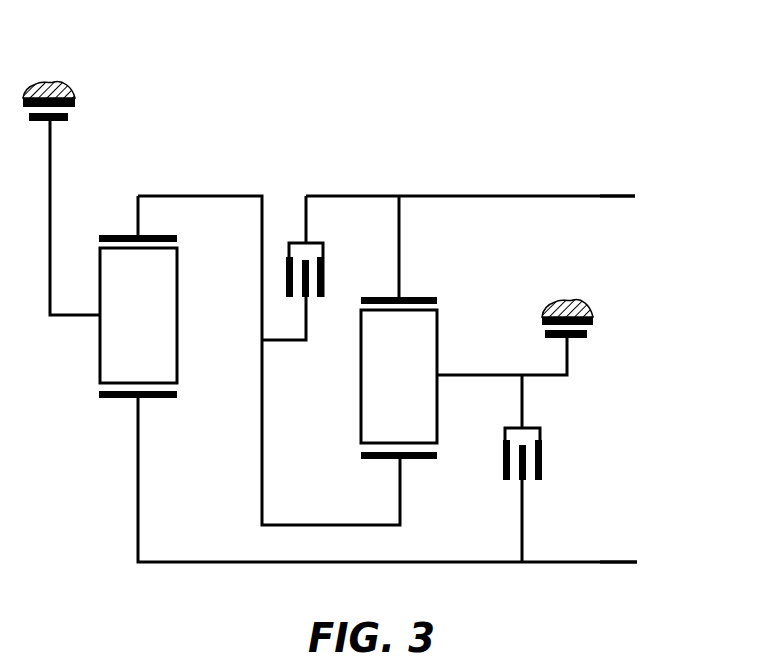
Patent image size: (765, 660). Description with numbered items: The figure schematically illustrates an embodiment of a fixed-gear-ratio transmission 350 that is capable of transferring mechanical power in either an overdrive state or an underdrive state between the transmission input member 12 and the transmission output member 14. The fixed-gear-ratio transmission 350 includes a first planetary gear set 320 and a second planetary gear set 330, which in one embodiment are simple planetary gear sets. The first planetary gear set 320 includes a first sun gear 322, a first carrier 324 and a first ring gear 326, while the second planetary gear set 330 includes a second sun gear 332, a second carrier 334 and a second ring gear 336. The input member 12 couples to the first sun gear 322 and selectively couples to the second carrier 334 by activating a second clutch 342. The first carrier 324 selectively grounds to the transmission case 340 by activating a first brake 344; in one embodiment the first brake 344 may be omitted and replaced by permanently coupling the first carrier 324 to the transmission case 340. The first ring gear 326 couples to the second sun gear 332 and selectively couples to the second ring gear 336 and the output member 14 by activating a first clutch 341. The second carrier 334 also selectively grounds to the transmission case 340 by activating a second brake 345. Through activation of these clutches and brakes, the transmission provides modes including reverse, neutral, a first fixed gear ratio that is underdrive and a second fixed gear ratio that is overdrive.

The fixed-gear-ratio transmission 350 is at (612, 104).
The first planetary gear set 320 is at (147, 315).
The first sun gear 322 is at (153, 399).
The first carrier 324 is at (158, 328).
The first ring gear 326 is at (110, 234).
The second planetary gear set 330 is at (400, 373).
The second sun gear 332 is at (415, 460).
The second carrier 334 is at (420, 393).
The second ring gear 336 is at (384, 296).
The transmission case 340 is at (346, 186).
The first clutch 341 is at (286, 275).
The second clutch 342 is at (543, 460).
The first brake 344 is at (62, 110).
The second brake 345 is at (588, 330).
The transmission output member 14 is at (668, 209).
The transmission input member 12 is at (668, 574).